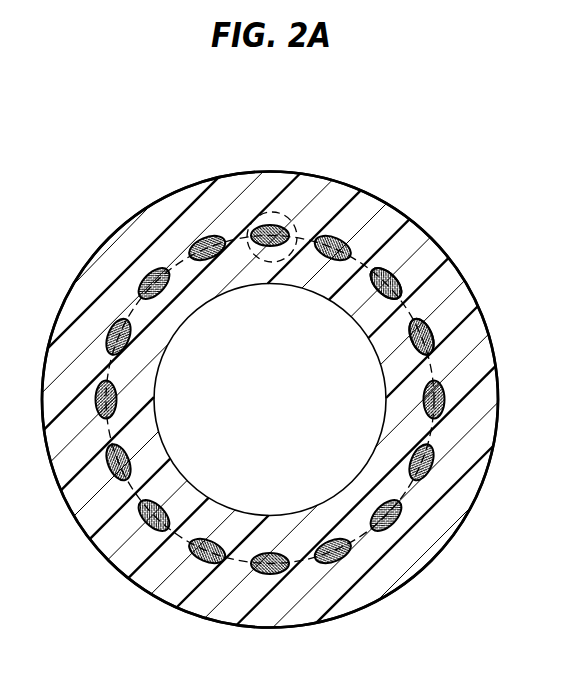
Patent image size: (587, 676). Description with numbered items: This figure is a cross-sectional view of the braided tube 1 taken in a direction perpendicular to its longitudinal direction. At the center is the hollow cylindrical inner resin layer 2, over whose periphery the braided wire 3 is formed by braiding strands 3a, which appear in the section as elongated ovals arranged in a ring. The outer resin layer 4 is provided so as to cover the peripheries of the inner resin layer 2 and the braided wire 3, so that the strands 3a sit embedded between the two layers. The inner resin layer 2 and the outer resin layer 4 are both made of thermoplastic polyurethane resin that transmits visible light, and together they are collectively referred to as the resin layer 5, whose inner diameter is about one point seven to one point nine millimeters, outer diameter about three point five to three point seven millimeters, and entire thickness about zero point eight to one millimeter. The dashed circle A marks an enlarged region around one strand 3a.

The braided tube 1 is at (75, 197).
The inner resin layer 2 is at (347, 281).
The braided wire 3 is at (388, 274).
The strand 3a is at (428, 322).
The outer resin layer 4 is at (470, 340).
The resin layer 5 is at (500, 380).
The enlarged region A is at (281, 214).